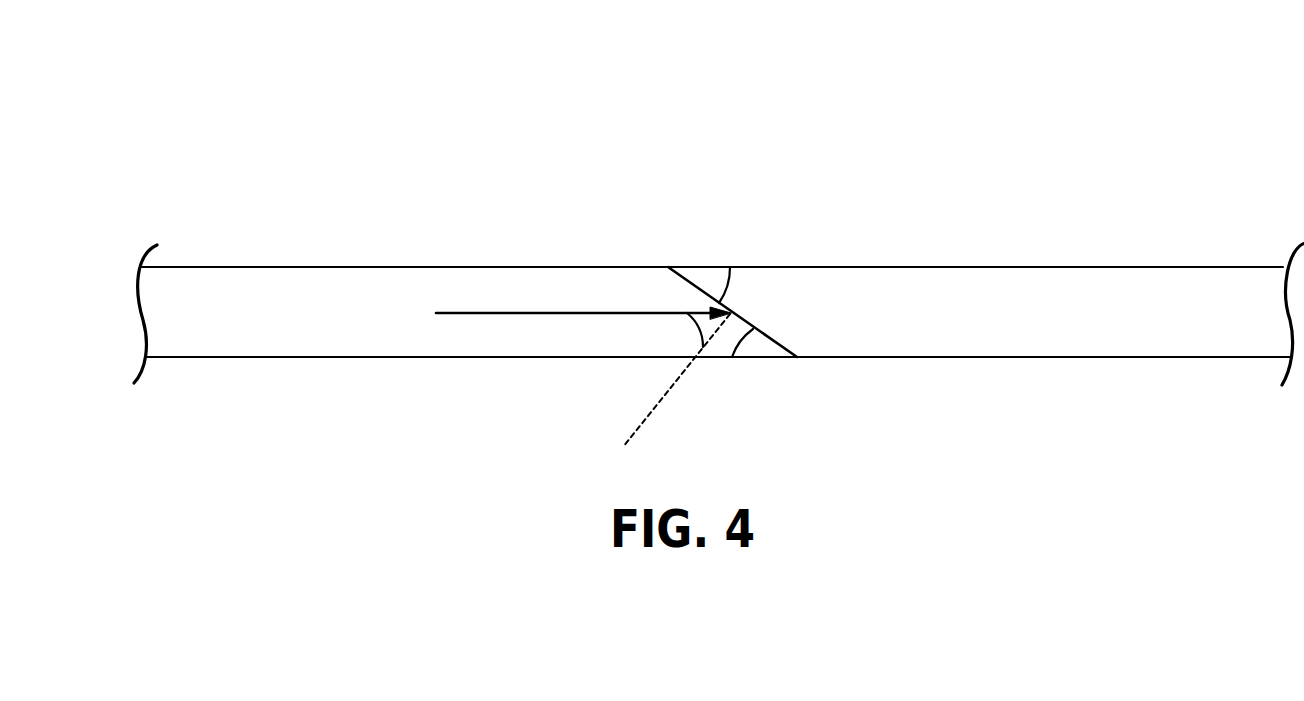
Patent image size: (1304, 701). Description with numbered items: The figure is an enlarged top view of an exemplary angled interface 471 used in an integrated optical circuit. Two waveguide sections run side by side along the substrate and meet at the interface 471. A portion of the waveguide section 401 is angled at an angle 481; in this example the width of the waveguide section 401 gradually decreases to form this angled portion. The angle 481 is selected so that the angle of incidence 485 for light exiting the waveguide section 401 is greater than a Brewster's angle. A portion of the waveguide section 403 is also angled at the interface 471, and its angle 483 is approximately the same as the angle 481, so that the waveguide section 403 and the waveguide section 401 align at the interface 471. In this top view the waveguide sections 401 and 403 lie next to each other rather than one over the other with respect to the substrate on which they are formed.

The waveguide section 401 is at (262, 290).
The waveguide section 403 is at (1010, 333).
The angled interface 471 is at (753, 141).
The angle 481 is at (740, 337).
The angle 483 is at (732, 276).
The angle of incidence 485 is at (687, 322).